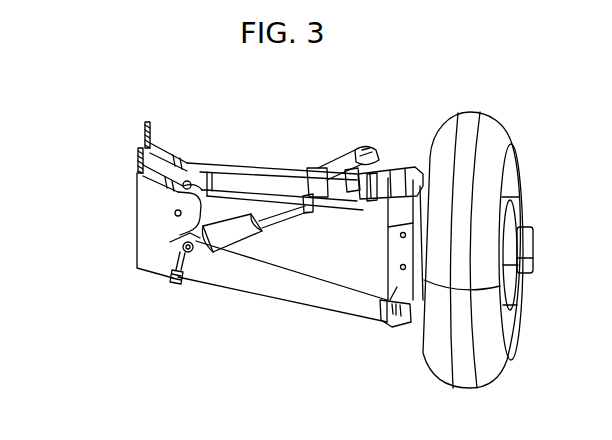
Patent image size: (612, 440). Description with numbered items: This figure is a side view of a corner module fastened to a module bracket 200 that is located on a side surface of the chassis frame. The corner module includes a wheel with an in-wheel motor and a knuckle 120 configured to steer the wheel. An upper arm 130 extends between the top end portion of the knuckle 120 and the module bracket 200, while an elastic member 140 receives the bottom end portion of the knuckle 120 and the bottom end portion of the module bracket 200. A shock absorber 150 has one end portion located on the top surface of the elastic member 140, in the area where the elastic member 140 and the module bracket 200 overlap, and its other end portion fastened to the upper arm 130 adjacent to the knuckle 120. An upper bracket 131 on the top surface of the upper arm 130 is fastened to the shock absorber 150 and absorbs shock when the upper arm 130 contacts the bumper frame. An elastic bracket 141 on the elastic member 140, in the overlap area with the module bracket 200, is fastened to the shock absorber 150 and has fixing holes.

The knuckle 120 is at (397, 168).
The upper arm 130 is at (250, 167).
The upper bracket 131 is at (315, 166).
The elastic member 140 is at (313, 293).
The elastic bracket 141 is at (178, 282).
The shock absorber 150 is at (237, 244).
The module bracket 200 is at (137, 226).